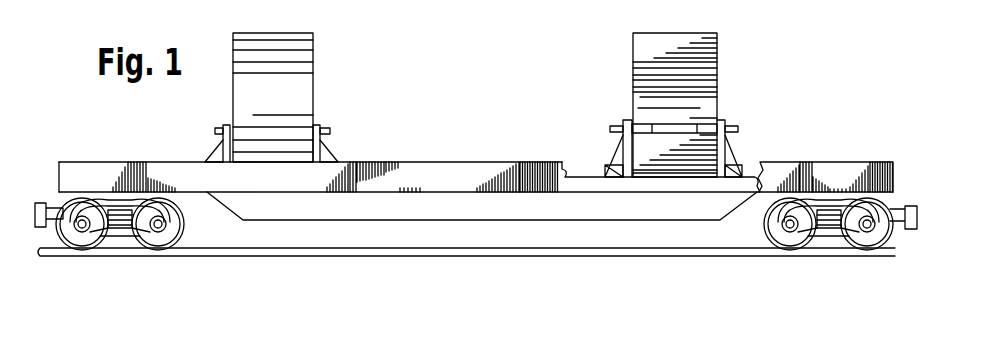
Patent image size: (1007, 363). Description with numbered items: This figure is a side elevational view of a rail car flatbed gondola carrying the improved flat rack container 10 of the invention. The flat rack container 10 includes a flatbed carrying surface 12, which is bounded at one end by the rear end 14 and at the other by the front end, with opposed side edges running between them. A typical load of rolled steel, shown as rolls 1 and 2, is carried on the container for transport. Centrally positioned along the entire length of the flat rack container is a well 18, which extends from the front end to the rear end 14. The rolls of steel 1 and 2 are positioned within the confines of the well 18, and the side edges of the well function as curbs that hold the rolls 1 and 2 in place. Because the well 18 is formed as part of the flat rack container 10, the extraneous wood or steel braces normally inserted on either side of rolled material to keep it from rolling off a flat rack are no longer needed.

The flat rack container 10 is at (455, 230).
The flatbed carrying surface 12 is at (585, 175).
The rear end 14 is at (56, 166).
The well 18 is at (438, 182).
The roll of steel 1 is at (280, 107).
The roll of steel 2 is at (682, 114).